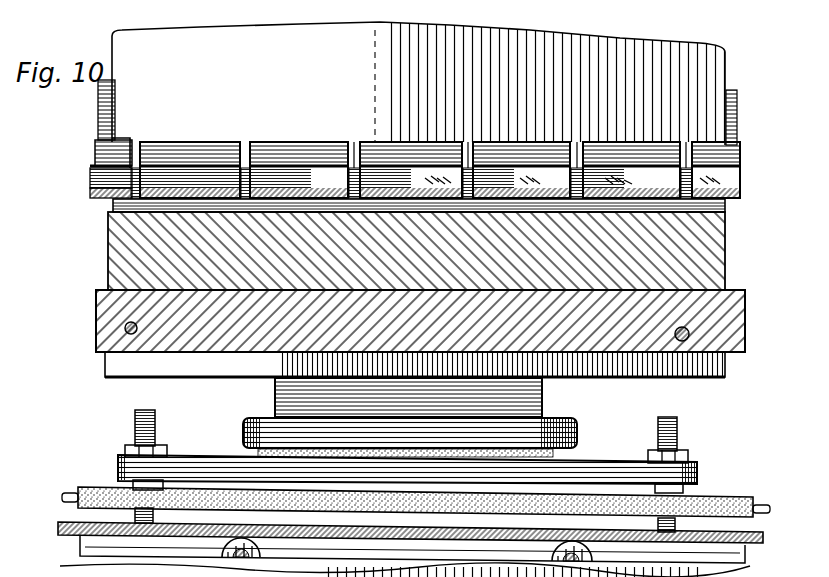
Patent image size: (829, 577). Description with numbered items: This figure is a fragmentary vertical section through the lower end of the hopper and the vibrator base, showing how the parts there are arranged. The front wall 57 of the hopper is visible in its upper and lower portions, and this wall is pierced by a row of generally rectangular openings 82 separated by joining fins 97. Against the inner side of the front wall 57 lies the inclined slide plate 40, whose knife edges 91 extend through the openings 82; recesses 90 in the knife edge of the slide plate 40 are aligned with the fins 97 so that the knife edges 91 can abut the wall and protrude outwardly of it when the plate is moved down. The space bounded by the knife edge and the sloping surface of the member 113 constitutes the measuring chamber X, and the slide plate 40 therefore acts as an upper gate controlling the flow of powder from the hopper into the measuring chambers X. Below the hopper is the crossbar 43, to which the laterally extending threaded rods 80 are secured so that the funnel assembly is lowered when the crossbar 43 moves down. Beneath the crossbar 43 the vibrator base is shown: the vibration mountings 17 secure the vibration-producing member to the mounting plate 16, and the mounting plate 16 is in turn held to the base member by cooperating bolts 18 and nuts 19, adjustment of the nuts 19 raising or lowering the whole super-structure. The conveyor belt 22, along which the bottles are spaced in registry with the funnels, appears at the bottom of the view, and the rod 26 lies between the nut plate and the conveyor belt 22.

The front wall of the hopper 57 is at (707, 86).
The slide plate 40 is at (98, 147).
The knife edges 91 is at (93, 182).
The openings 82 is at (133, 137).
The joining fins 97 is at (152, 140).
The recesses 90 is at (143, 167).
The measuring chamber X is at (727, 210).
The member with sloping surface 113 is at (713, 267).
The crossbar 43 is at (727, 303).
The threaded rods 80 is at (690, 336).
The vibration mountings 17 is at (243, 452).
The mounting plate 16 is at (553, 437).
The bolts 18 is at (155, 424).
The nuts 19 is at (167, 449).
The rod 26 is at (98, 484).
The conveyor belt 22 is at (72, 521).